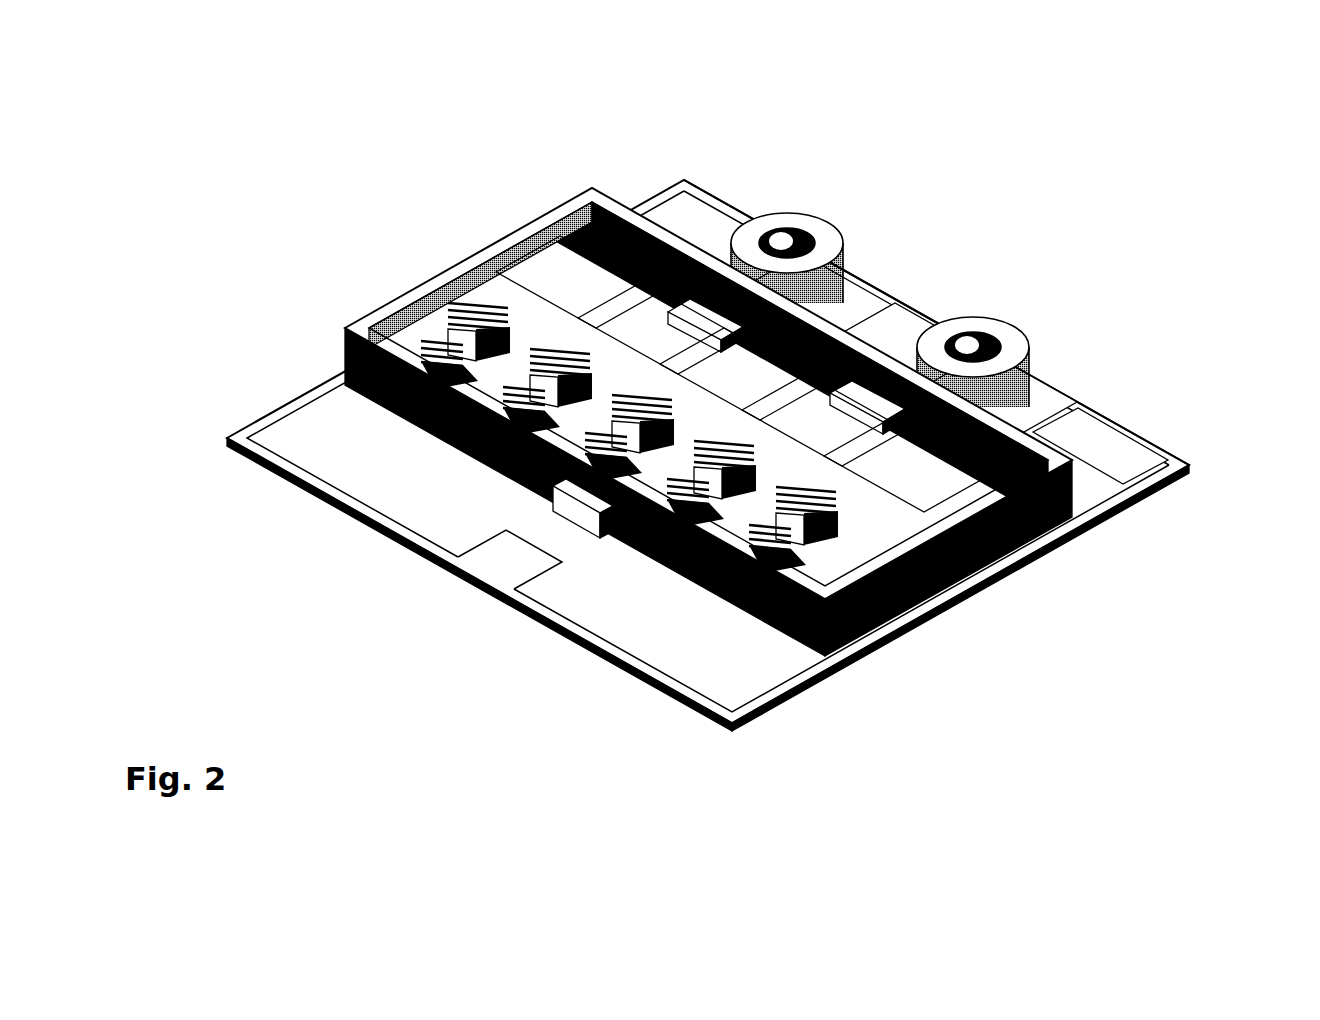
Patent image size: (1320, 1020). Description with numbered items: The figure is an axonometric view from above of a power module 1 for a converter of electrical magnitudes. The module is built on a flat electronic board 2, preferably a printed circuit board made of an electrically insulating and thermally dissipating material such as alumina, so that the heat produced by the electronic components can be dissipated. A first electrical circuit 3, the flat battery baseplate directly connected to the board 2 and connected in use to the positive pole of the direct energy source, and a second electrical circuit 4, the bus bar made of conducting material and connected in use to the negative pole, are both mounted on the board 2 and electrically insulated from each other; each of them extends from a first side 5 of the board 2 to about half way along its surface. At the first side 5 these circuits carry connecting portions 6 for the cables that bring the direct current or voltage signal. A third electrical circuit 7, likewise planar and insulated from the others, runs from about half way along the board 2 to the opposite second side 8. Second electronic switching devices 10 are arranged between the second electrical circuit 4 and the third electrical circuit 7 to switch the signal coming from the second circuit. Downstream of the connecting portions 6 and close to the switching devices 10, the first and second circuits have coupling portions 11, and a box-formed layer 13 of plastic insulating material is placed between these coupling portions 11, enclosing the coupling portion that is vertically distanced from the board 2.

The power module 1 is at (430, 168).
The flat electronic board 2 is at (751, 430).
The first electrical circuit 3 is at (1140, 497).
The second electrical circuit 4 is at (1050, 388).
The first side 5 is at (878, 281).
The connecting portions 6 is at (910, 327).
The third electrical circuit 7 is at (590, 588).
The second side 8 is at (458, 582).
The second electronic switching devices 10 is at (442, 325).
The coupling portions 11 is at (953, 492).
The layer of electrically insulating material 13 is at (1020, 528).